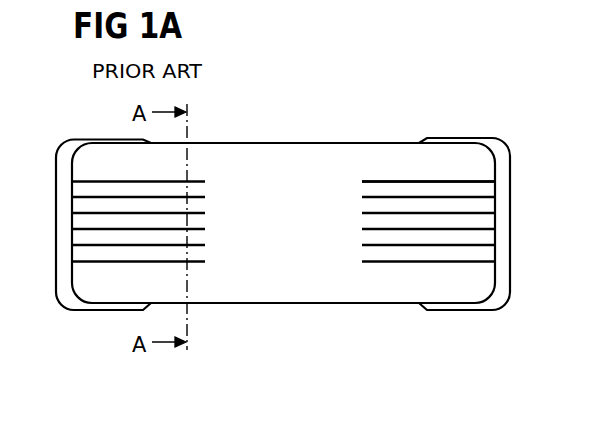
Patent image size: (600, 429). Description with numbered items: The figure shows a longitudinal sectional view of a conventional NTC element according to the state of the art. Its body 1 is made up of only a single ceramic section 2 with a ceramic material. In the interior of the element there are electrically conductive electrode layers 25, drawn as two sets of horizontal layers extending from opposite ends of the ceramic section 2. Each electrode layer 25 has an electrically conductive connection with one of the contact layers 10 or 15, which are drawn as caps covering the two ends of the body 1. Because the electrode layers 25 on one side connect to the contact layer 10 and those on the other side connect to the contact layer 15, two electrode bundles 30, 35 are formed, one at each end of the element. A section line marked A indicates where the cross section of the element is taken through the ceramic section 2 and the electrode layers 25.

The body 1 is at (319, 127).
The ceramic section 2 is at (298, 303).
The contact layer 10 is at (503, 220).
The contact layer 15 is at (72, 150).
The electrode layer 25 is at (395, 180).
The electrode bundle 30 is at (360, 180).
The electrode bundle 35 is at (211, 180).